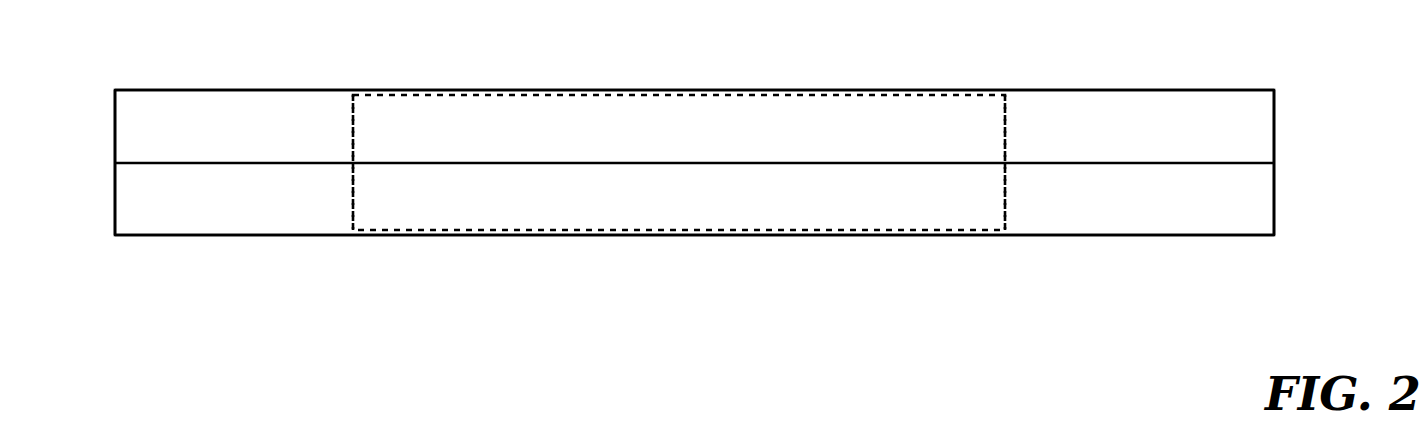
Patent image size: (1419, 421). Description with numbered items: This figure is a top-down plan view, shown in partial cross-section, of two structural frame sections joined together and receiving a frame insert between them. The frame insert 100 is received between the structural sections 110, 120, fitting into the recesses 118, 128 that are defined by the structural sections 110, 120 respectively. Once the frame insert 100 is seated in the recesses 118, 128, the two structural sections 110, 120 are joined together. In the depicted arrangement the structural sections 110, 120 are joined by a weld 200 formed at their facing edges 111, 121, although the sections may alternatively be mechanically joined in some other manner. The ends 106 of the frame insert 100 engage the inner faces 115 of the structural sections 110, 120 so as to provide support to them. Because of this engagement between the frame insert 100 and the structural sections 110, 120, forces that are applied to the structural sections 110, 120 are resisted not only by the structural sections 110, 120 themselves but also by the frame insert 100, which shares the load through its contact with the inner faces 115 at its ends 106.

The frame insert 100 is at (583, 182).
The ends of the frame insert 106 is at (369, 227).
The structural section 110 is at (200, 90).
The facing edge 111 is at (1240, 158).
The inner faces 115 is at (330, 231).
The recess 118 is at (160, 130).
The structural section 120 is at (205, 235).
The facing edge 121 is at (1240, 170).
The recess 128 is at (156, 197).
The weld 200 is at (1129, 158).